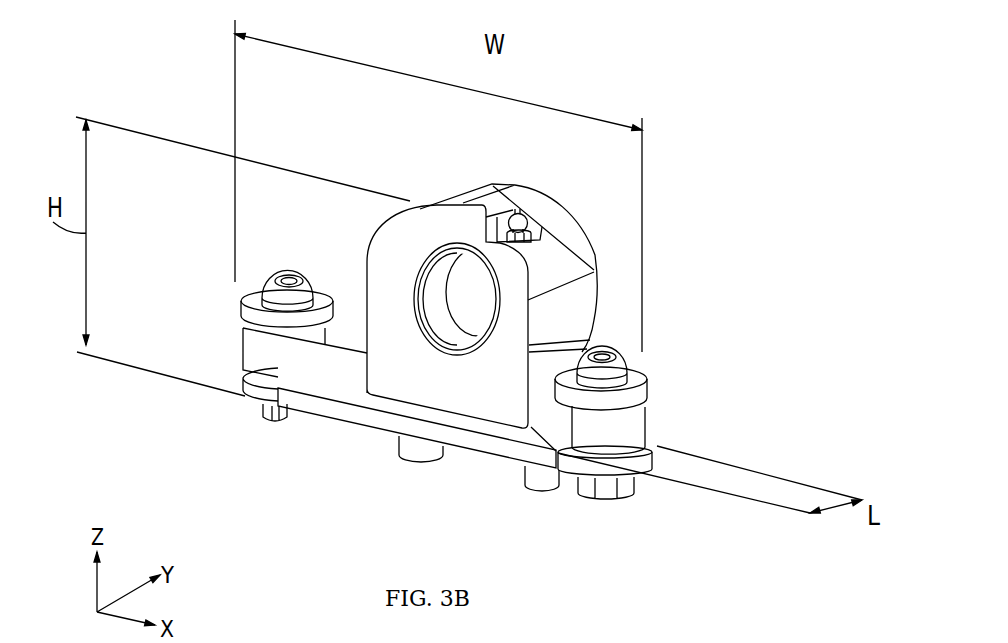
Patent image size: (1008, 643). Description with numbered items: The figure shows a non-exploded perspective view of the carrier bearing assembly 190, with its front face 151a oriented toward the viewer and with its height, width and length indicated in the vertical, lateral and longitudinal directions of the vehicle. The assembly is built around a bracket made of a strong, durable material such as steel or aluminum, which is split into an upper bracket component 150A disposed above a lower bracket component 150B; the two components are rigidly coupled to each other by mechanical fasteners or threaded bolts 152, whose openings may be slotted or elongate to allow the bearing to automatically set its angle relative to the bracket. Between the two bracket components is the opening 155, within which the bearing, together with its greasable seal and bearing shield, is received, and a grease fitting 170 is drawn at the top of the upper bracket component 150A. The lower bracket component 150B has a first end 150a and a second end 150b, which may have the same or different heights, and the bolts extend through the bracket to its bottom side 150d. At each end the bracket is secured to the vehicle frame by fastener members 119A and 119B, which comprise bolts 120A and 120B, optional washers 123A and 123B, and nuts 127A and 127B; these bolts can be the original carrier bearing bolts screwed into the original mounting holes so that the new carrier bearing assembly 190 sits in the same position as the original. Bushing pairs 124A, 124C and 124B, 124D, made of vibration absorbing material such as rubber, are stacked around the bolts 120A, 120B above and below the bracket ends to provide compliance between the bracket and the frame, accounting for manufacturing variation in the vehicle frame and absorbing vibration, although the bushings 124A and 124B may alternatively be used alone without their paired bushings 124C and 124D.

The carrier bearing assembly 190 is at (696, 138).
The fastener member 119A is at (291, 205).
The fastener member 119B is at (630, 300).
The upper bracket component 150A is at (411, 203).
The lower bracket component 150B is at (367, 327).
The opening 155 is at (468, 308).
The grease fitting 170 is at (518, 212).
The bolt 120A is at (272, 283).
The bolt 120B is at (618, 362).
The bushing 124A is at (243, 312).
The bushing 124B is at (636, 397).
The bushing 124C is at (242, 380).
The bushing 124D is at (638, 447).
The first end 150a is at (246, 340).
The second end 150b is at (641, 432).
The bottom side 150d is at (352, 422).
The front face 151a is at (417, 428).
The threaded bolt 152 is at (399, 452).
The washer 123A is at (246, 396).
The washer 123B is at (638, 478).
The nut 127A is at (263, 412).
The nut 127B is at (614, 498).